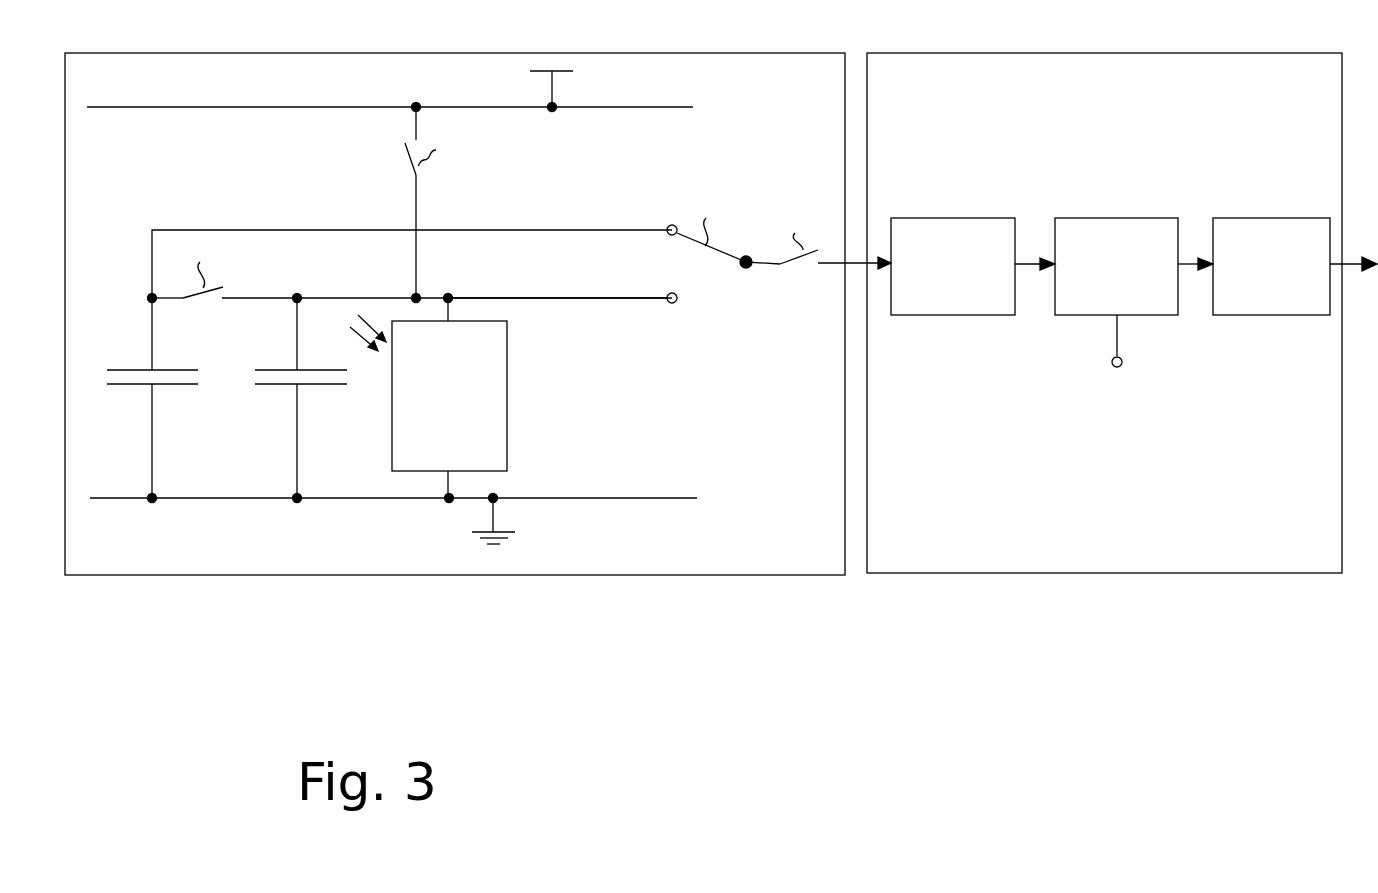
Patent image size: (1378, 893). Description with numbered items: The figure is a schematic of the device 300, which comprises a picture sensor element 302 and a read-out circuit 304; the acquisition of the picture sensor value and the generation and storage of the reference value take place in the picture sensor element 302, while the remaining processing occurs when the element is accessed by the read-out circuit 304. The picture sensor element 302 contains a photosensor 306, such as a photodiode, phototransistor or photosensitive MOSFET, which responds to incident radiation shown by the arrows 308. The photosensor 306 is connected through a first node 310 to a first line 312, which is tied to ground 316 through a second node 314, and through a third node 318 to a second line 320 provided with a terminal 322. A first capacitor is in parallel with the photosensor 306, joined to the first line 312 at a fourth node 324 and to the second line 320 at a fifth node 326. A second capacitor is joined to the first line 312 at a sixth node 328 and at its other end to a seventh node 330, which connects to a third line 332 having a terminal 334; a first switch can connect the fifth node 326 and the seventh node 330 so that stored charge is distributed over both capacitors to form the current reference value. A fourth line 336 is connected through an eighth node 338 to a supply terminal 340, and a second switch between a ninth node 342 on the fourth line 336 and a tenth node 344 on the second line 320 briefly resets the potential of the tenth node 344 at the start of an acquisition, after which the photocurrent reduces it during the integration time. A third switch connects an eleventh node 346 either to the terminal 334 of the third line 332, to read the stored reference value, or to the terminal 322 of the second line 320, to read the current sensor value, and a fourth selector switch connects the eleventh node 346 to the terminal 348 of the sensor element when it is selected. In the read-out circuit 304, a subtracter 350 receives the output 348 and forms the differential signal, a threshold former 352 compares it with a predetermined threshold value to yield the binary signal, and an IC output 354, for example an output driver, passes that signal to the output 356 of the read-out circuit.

The device 300 is at (731, 682).
The picture sensor element 302 is at (470, 578).
The read-out circuit 304 is at (1147, 575).
The photosensor 306 is at (508, 400).
The arrows 308 is at (372, 340).
The first node 310 is at (450, 503).
The first line 312 is at (697, 497).
The second node 314 is at (495, 495).
The ground 316 is at (505, 547).
The third node 318 is at (451, 294).
The second line 320 is at (636, 300).
The terminal 322 is at (675, 305).
The fourth node 324 is at (297, 503).
The fifth node 326 is at (295, 295).
The sixth node 328 is at (152, 503).
The seventh node 330 is at (137, 305).
The third line 332 is at (585, 229).
The terminal 334 is at (668, 225).
The fourth line 336 is at (673, 107).
The eighth node 338 is at (552, 112).
The supply terminal 340 is at (538, 70).
The ninth node 342 is at (412, 110).
The tenth node 344 is at (413, 295).
The eleventh node 346 is at (750, 268).
The terminal 348 is at (820, 270).
The subtracter 350 is at (955, 218).
The threshold former 352 is at (1115, 218).
The IC output 354 is at (1283, 218).
The output 356 is at (1357, 270).